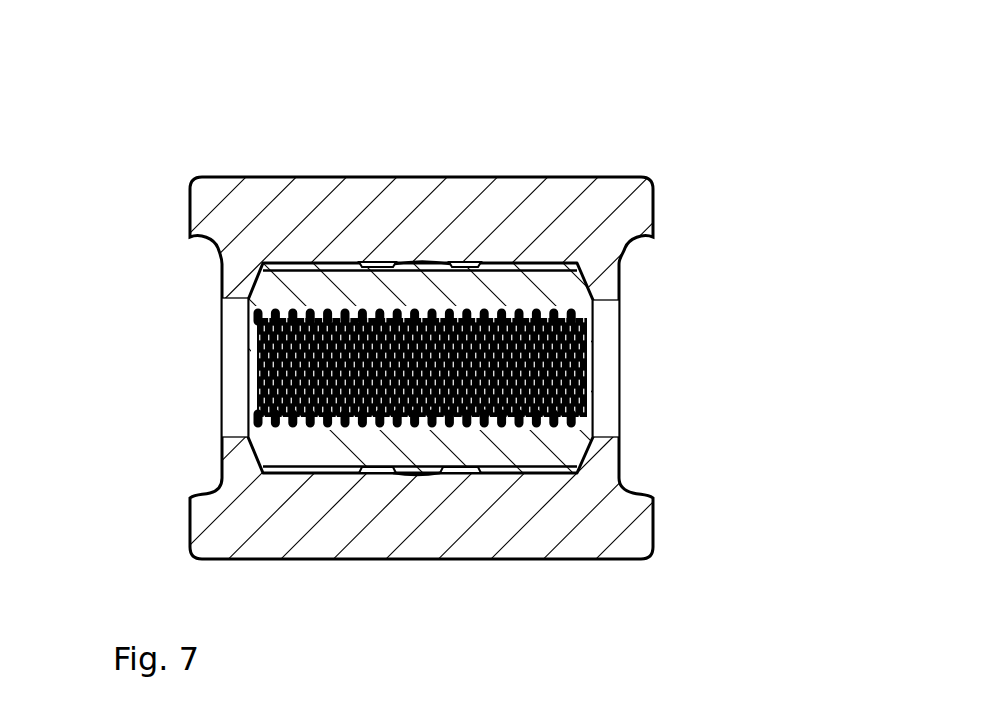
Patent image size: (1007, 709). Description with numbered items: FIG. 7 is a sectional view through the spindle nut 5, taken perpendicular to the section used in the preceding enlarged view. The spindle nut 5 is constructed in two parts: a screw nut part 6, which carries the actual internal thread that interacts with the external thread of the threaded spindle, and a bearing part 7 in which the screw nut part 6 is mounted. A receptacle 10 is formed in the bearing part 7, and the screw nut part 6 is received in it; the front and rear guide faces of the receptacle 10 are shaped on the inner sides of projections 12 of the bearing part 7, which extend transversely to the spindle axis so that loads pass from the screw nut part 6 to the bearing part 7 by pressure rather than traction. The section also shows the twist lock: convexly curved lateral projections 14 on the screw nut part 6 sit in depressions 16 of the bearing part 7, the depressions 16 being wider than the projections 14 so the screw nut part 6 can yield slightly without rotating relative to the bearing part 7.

The spindle nut 5 is at (576, 136).
The bearing part 7 is at (262, 213).
The screw nut part 6 is at (341, 281).
The receptacle 10 is at (308, 266).
The depressions 16 is at (380, 261).
The lateral projections 14 is at (425, 275).
The projections 12 is at (235, 450).